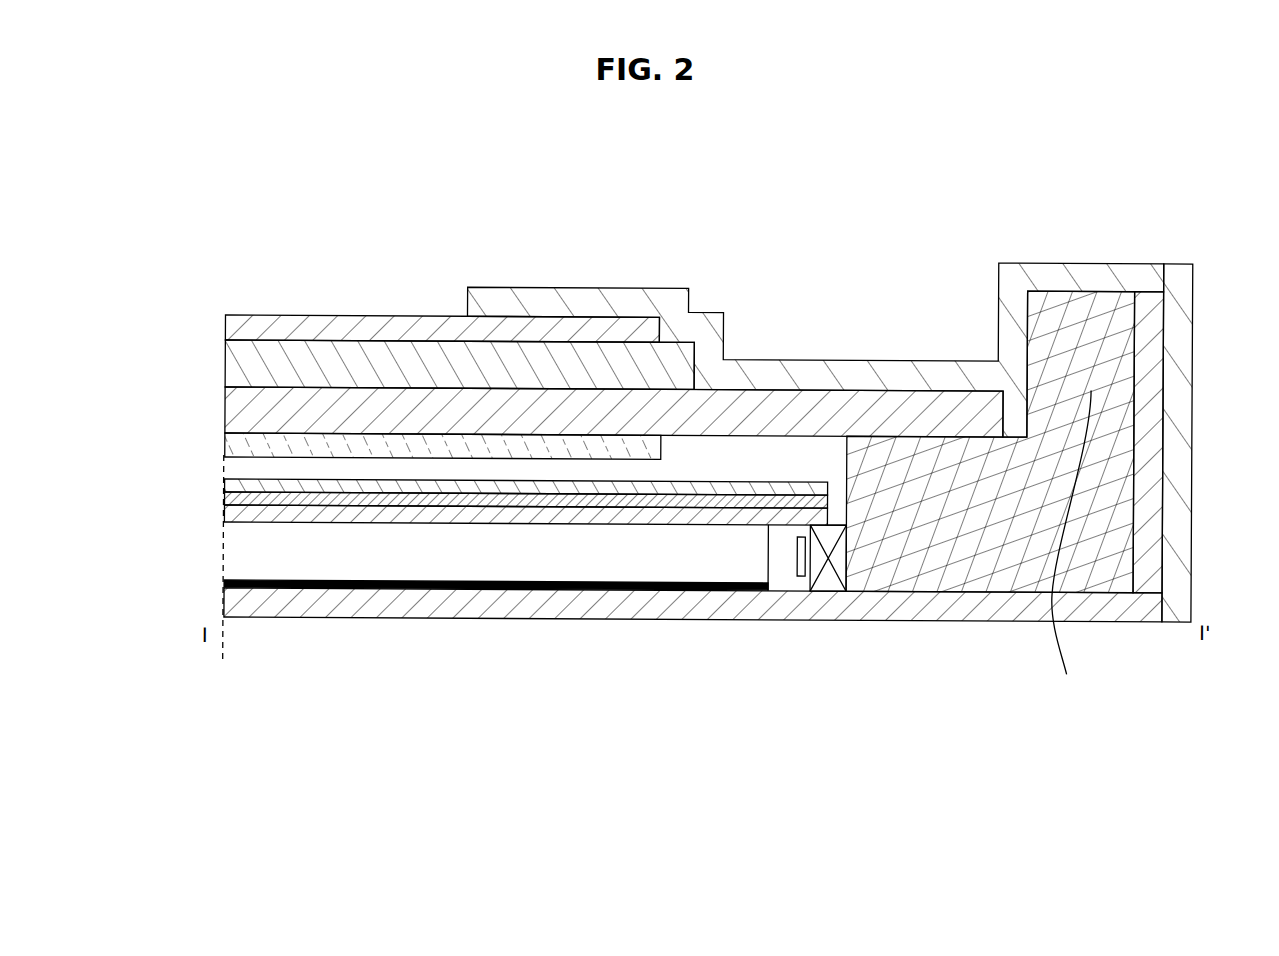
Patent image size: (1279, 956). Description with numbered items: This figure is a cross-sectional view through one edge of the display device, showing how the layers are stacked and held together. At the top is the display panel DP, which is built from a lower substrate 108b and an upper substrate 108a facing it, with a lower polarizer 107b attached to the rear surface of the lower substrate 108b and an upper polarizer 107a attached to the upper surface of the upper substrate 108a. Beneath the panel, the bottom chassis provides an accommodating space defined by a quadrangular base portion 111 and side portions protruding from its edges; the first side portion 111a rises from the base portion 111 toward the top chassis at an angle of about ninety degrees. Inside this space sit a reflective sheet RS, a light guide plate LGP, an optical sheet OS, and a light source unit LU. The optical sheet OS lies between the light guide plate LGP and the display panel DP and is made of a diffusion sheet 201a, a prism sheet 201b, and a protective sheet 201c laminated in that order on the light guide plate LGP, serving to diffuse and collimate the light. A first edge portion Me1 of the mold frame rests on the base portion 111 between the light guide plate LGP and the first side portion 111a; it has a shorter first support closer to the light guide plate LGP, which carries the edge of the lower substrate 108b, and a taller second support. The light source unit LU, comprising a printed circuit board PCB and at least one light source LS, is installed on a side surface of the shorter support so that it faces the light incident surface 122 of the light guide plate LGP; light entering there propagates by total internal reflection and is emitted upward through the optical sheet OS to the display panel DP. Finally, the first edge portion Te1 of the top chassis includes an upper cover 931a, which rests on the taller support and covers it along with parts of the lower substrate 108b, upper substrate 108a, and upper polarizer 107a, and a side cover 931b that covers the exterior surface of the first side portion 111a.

The display panel DP is at (255, 215).
The upper polarizer 107a is at (262, 322).
The upper substrate 108a is at (317, 357).
The lower substrate 108b is at (390, 405).
The lower polarizer 107b is at (452, 445).
The first edge portion of the top chassis Te1 is at (997, 178).
The upper cover 931a is at (879, 369).
The side cover 931b is at (1171, 349).
The optical sheet OS is at (127, 465).
The diffusion sheet 201a is at (235, 517).
The prism sheet 201b is at (223, 502).
The protective sheet 201c is at (223, 484).
The light guide plate LGP is at (243, 550).
The reflective sheet RS is at (374, 588).
The base portion 111 is at (474, 598).
The first side portion 111a is at (1165, 446).
The light incident surface 122 is at (766, 556).
The light source unit LU is at (783, 703).
The light source LS is at (801, 573).
The printed circuit board PCB is at (826, 577).
The first edge portion of the mold frame Me1 is at (938, 702).